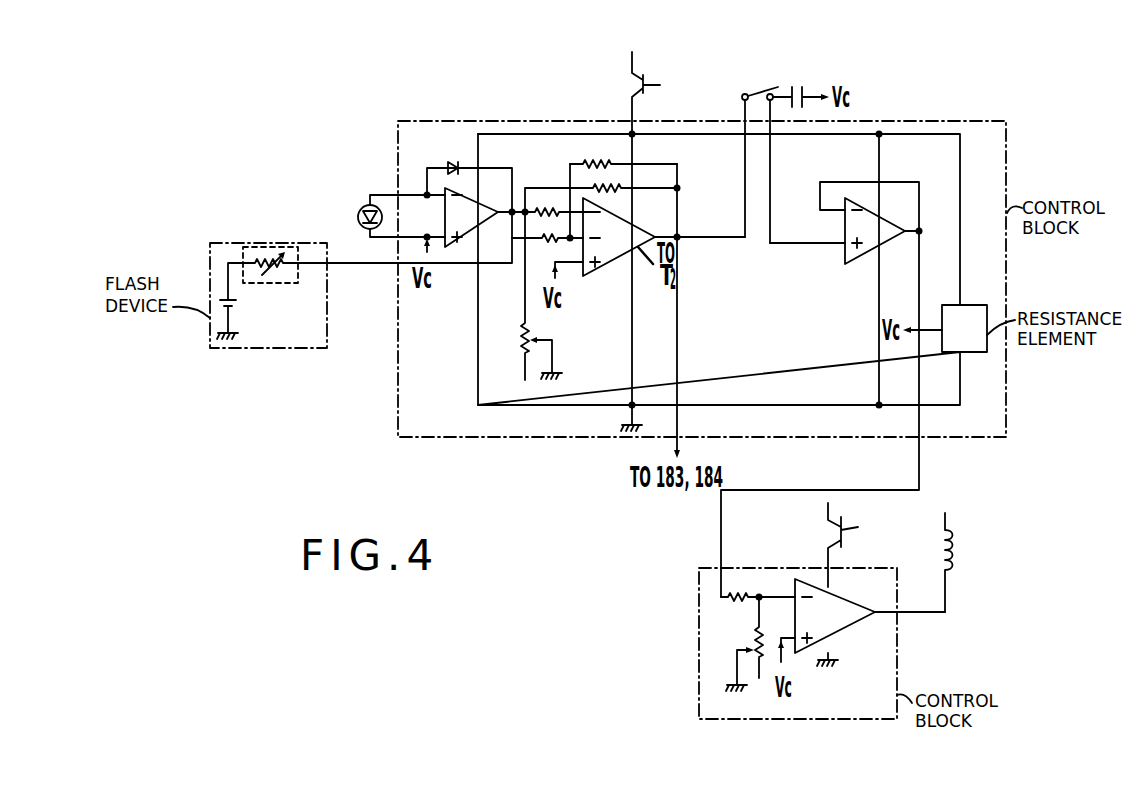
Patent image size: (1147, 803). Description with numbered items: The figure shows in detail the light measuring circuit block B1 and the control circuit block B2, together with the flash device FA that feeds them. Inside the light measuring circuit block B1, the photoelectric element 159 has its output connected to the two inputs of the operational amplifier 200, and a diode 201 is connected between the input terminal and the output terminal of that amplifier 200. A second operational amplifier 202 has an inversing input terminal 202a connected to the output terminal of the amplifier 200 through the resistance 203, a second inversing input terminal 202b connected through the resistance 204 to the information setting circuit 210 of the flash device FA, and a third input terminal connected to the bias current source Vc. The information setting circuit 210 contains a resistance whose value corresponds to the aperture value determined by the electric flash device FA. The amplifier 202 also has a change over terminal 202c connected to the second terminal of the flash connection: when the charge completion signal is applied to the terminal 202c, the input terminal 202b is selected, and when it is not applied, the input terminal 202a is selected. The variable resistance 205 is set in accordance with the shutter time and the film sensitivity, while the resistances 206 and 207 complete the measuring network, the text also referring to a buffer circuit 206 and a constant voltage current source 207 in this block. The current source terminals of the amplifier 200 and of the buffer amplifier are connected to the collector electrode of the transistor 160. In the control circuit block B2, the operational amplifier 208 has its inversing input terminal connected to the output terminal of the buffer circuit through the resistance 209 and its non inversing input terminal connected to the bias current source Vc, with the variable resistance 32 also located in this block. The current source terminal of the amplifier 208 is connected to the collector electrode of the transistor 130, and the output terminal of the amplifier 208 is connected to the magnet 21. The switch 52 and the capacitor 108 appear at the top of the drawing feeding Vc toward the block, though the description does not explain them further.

The information setting circuit 210 is at (272, 247).
The photoelectric element 159 is at (360, 207).
The diode 201 is at (448, 165).
The operational amplifier 200 is at (455, 250).
The resistance 203 is at (546, 208).
The resistance 204 is at (547, 243).
The variable resistance 205 is at (525, 335).
The operational amplifier 202 is at (605, 263).
The inversing input terminal 202a is at (595, 203).
The second inversing input terminal 202b is at (583, 248).
The change over terminal 202c is at (640, 248).
The resistance 206 is at (595, 160).
The resistance 207 is at (612, 186).
The transistor 160 is at (660, 85).
The switch 52 is at (757, 93).
The capacitor 108 is at (800, 87).
The transistor 130 is at (858, 527).
The magnet 21 is at (951, 552).
The resistance 209 is at (740, 590).
The variable resistance 32 is at (750, 643).
The operational amplifier 208 is at (855, 623).
The flash device FA is at (240, 349).
The light measuring circuit block B1 is at (1007, 140).
The control circuit block B2 is at (899, 650).